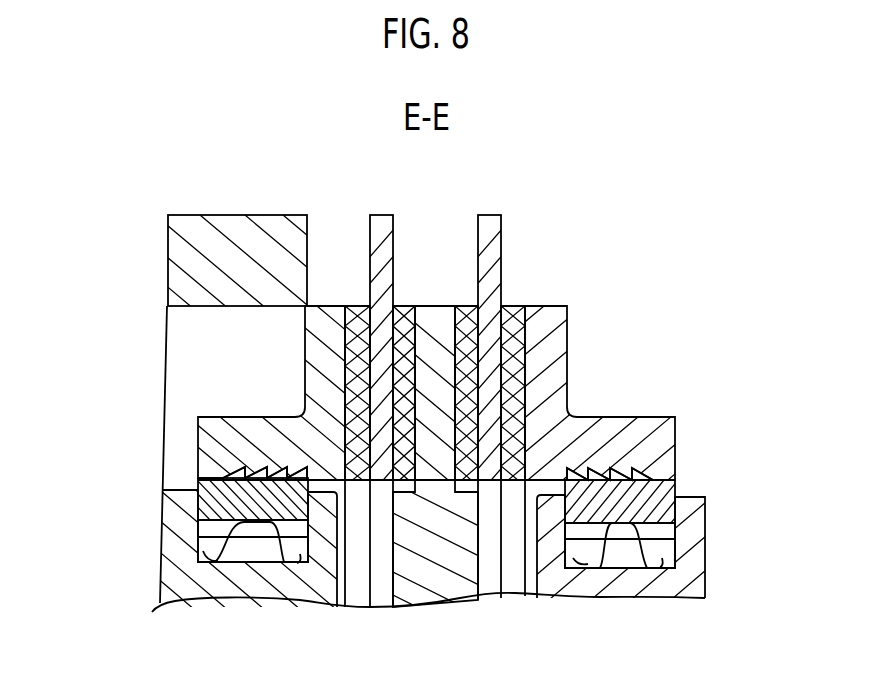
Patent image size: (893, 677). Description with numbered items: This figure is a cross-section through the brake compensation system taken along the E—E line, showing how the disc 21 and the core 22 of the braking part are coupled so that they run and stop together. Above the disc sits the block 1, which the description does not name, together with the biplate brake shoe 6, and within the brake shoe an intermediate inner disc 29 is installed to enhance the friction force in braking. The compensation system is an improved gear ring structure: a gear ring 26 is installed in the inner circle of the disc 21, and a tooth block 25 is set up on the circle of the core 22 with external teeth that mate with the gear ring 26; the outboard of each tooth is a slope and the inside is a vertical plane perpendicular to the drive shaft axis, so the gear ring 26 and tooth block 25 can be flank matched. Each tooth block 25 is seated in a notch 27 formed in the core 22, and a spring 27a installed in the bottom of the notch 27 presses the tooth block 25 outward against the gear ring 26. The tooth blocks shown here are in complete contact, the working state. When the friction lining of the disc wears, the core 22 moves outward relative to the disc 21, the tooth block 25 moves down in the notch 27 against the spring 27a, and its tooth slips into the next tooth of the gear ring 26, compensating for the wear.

The upper block / housing cover 1 is at (218, 248).
The brake shoe 6 is at (383, 240).
The disc 21 is at (212, 423).
The core 22 is at (175, 570).
The tooth block 25 is at (203, 510).
The gear ring 26 is at (220, 460).
The notch 27 is at (602, 558).
The spring 27a is at (631, 568).
The intermediate inner disc 29 is at (450, 582).